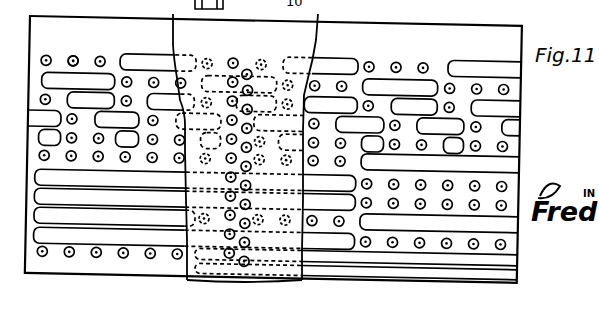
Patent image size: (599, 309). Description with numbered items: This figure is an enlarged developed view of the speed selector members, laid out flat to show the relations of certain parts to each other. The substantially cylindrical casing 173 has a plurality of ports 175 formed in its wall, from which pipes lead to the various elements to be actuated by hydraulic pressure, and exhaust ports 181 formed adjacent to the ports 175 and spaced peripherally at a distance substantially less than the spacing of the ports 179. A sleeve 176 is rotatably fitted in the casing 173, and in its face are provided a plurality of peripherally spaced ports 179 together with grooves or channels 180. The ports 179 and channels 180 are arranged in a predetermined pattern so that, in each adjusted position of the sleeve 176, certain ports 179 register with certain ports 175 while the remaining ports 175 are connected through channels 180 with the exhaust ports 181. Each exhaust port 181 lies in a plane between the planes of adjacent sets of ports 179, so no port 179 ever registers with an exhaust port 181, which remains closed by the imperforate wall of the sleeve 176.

The casing 173 is at (318, 25).
The ports 175 is at (233, 57).
The sleeve 176 is at (379, 28).
The ports 179 is at (74, 56).
The grooves or channels 180 is at (153, 51).
The exhaust ports 181 is at (248, 67).